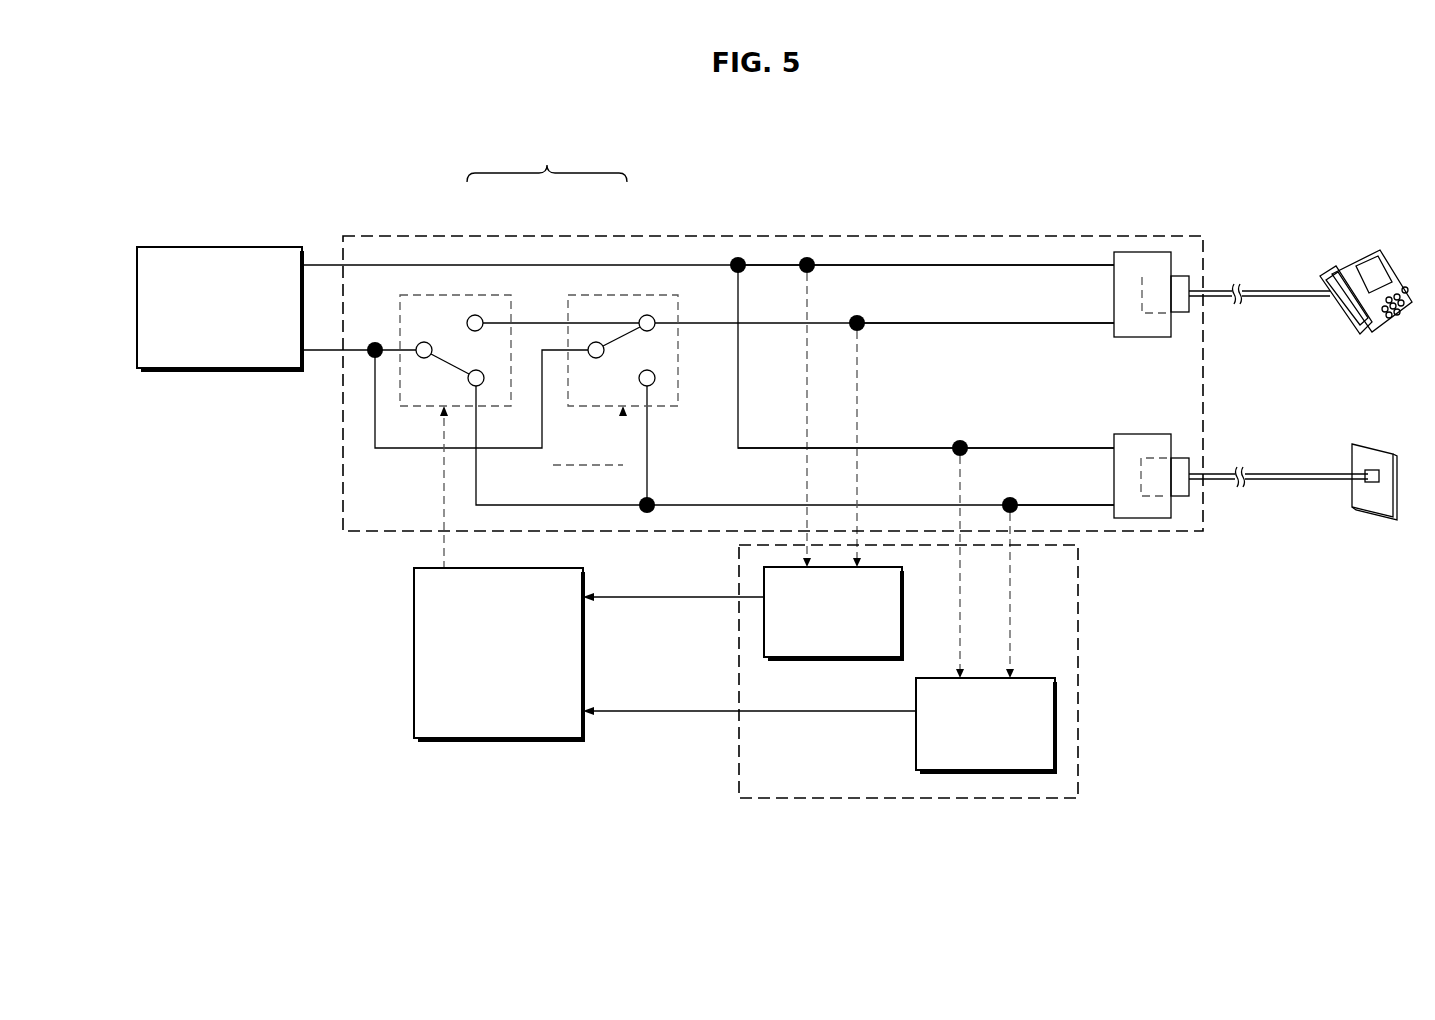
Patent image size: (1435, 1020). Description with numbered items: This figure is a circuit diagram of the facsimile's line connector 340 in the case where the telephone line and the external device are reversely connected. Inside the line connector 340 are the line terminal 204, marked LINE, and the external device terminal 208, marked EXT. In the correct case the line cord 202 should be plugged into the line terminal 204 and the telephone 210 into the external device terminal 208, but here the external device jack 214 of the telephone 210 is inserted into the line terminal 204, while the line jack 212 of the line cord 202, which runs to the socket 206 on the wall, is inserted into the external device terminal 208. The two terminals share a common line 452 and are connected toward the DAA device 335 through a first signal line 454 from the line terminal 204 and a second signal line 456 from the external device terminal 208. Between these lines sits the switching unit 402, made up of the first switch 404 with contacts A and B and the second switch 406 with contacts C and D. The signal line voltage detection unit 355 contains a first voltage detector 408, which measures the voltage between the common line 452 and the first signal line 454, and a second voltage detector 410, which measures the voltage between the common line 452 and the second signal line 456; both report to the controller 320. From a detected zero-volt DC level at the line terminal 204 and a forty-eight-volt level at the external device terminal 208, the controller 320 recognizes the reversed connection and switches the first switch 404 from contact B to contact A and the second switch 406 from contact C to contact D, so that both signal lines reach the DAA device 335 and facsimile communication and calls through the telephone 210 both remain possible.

The DAA device 335 is at (218, 247).
The line connector 340 is at (978, 236).
The switching unit 402 is at (547, 158).
The second switch 406 is at (447, 295).
The first switch 404 is at (612, 295).
The common line 452 is at (843, 265).
The first signal line 454 is at (1000, 325).
The second signal line 456 is at (1057, 505).
The line terminal 204 is at (1141, 258).
The external device jack 214 is at (1185, 275).
The telephone 210 is at (1360, 252).
The external device terminal 208 is at (1135, 434).
The line jack 212 is at (1185, 458).
The line cord 202 is at (1295, 476).
The socket 206 is at (1378, 452).
The controller 320 is at (414, 665).
The signal line voltage detection unit 355 is at (1078, 596).
The first voltage detector 408 is at (904, 567).
The second voltage detector 410 is at (1036, 678).